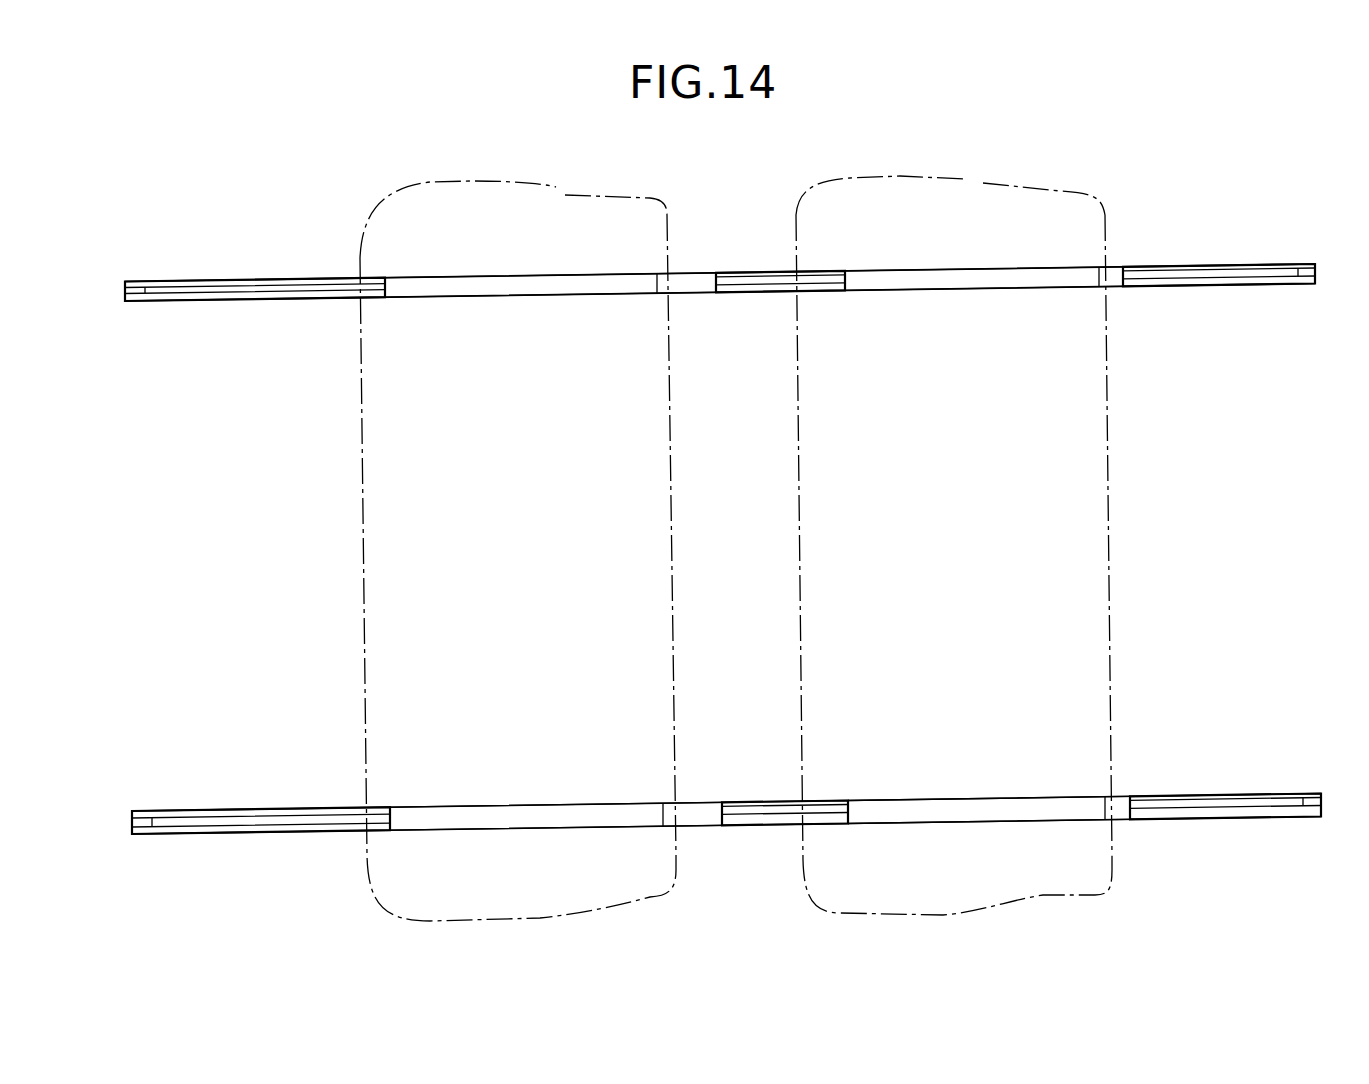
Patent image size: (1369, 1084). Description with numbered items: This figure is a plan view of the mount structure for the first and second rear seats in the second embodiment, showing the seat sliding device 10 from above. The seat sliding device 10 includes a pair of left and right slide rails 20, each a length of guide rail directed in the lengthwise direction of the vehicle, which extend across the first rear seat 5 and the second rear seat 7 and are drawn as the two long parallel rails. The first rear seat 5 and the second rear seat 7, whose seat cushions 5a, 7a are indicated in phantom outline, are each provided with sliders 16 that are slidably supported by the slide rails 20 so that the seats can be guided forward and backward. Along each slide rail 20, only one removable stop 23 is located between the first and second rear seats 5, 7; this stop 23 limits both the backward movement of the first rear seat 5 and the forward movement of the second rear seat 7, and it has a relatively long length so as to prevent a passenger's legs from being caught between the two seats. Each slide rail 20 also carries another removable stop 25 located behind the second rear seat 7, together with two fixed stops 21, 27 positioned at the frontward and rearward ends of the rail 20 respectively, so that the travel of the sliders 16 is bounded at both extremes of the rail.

The first rear seat 5 is at (430, 182).
The seat cushion 5a is at (556, 199).
The second rear seat 7 is at (905, 176).
The seat cushion 7a is at (975, 190).
The seat sliding device 10 is at (726, 526).
The slider 16 is at (500, 285).
The slide rail 20 is at (289, 279).
The fixed stop 21 is at (135, 281).
The removable stop 23 is at (696, 277).
The removable stop 25 is at (1118, 272).
The fixed stop 27 is at (1297, 271).